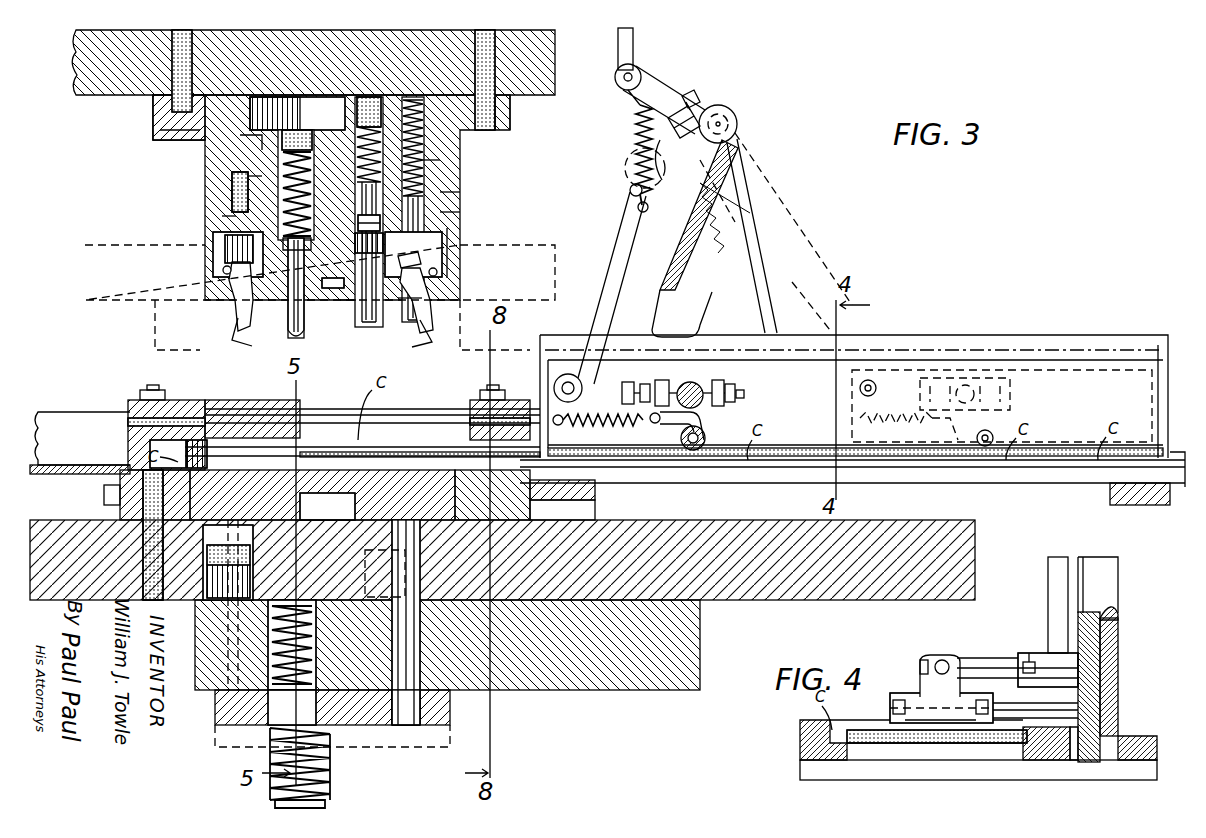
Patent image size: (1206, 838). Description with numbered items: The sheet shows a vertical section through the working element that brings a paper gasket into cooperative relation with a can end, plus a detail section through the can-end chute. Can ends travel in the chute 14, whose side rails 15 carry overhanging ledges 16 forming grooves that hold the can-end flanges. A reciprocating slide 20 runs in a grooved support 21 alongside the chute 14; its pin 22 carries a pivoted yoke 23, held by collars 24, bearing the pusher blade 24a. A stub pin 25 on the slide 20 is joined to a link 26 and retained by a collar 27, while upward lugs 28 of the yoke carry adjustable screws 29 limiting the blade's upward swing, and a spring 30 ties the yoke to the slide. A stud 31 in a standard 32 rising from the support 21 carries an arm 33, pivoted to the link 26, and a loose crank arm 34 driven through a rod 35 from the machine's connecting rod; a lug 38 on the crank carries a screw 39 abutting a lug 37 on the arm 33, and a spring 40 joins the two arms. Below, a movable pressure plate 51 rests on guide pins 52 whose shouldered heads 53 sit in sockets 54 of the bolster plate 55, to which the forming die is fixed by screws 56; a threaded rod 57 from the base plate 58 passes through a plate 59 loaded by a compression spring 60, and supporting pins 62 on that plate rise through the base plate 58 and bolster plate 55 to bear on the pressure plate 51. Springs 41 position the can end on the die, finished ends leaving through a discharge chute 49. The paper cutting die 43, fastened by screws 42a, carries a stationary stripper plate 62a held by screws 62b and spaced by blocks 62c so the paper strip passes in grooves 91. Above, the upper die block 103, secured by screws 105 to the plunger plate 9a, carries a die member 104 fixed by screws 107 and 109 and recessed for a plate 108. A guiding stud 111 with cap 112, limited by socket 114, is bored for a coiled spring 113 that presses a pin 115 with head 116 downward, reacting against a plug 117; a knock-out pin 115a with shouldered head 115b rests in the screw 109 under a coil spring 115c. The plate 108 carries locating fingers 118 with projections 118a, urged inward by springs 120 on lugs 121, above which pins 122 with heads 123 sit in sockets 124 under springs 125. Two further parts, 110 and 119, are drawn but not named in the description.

In FIG. 3, the head 9a is at (112, 84).
In FIG. 3, the socket 114 is at (165, 126).
In FIG. 3, the screws 105 is at (177, 134).
In FIG. 3, the cap 112 is at (247, 142).
In FIG. 3, the guiding stud 111 is at (232, 183).
In FIG. 3, the screw 107 is at (232, 206).
In FIG. 3, the coiled spring 113 is at (222, 217).
In FIG. 3, the head 116 is at (245, 250).
In FIG. 3, the pivot pin 119 is at (222, 272).
In FIG. 3, the locating fingers 118 is at (226, 294).
In FIG. 3, the projections 118a is at (236, 318).
In FIG. 3, the pin 115 is at (288, 322).
In FIG. 3, the plate 108 is at (330, 288).
In FIG. 3, the screw 109 is at (344, 303).
In FIG. 3, the knock-out pin 115a is at (366, 318).
In FIG. 3, the springs 120 is at (408, 302).
In FIG. 3, the shouldered head 115b is at (386, 270).
In FIG. 3, the plug 117 is at (291, 130).
In FIG. 3, the slot 110 is at (346, 110).
In FIG. 3, the coil spring 115c is at (391, 126).
In FIG. 3, the springs 125 is at (502, 119).
In FIG. 3, the sockets 124 is at (442, 160).
In FIG. 3, the upper die block 103 is at (458, 186).
In FIG. 3, the heads 123 is at (458, 196).
In FIG. 3, the pins 122 is at (457, 216).
In FIG. 3, the die member 104 is at (463, 240).
In FIG. 3, the lugs 121 is at (440, 250).
In FIG. 3, the arm 35 is at (618, 52).
In FIG. 3, the crank arm 34 is at (660, 90).
In FIG. 3, the screw 39 is at (692, 100).
In FIG. 3, the lug 38 is at (670, 118).
In FIG. 3, the lug 37 is at (660, 142).
In FIG. 3, the spring 40 is at (640, 168).
In FIG. 3, the stud 31 is at (735, 124).
In FIG. 3, the arm 33 is at (626, 245).
In FIG. 4, the arm 33 is at (1048, 567).
In FIG. 3, the standard 32 is at (742, 240).
In FIG. 4, the standard 32 is at (1118, 561).
In FIG. 3, the reciprocating slide 20 is at (766, 362).
In FIG. 4, the reciprocating slide 20 is at (1118, 626).
In FIG. 3, the grooved support 21 is at (882, 340).
In FIG. 4, the grooved support 21 is at (1120, 609).
In FIG. 3, the lugs 28 is at (662, 380).
In FIG. 4, the lugs 28 is at (943, 655).
In FIG. 3, the link 26 is at (605, 392).
In FIG. 4, the link 26 is at (1120, 653).
In FIG. 3, the stub pin 25 is at (706, 390).
In FIG. 4, the stub pin 25 is at (975, 668).
In FIG. 3, the adjustable screws 29 is at (745, 394).
In FIG. 3, the yoke 23 is at (702, 420).
In FIG. 4, the yoke 23 is at (945, 712).
In FIG. 3, the pin 22 is at (706, 436).
In FIG. 4, the pin 22 is at (1120, 687).
In FIG. 3, the spring 30 is at (600, 426).
In FIG. 3, the pusher blade 24a is at (630, 470).
In FIG. 3, the chute 14 is at (938, 485).
In FIG. 4, the chute 14 is at (790, 779).
In FIG. 3, the screws 62b is at (151, 386).
In FIG. 3, the stationary stripper plate 62a is at (142, 392).
In FIG. 3, the spacing blocks 62c is at (130, 420).
In FIG. 3, the grooves 91 is at (203, 407).
In FIG. 3, the springs 41 is at (222, 438).
In FIG. 3, the discharge chute 49 is at (58, 425).
In FIG. 3, the paper cutting die 43 is at (126, 431).
In FIG. 3, the screws 42a is at (118, 482).
In FIG. 3, the screws 56 is at (106, 522).
In FIG. 3, the movable pressure plate 51 is at (376, 462).
In FIG. 3, the guide pins 52 is at (212, 570).
In FIG. 3, the sockets 54 is at (226, 600).
In FIG. 3, the shouldered heads 53 is at (270, 642).
In FIG. 3, the threaded rod 57 is at (272, 662).
In FIG. 3, the coiled compression spring 60 is at (326, 766).
In FIG. 3, the plate 59 is at (378, 728).
In FIG. 3, the supporting pins 62 is at (430, 650).
In FIG. 3, the base plate 58 is at (533, 698).
In FIG. 3, the bolster plate 55 is at (748, 600).
In FIG. 4, the collar 27 is at (1029, 653).
In FIG. 4, the overhanging strips or ledges 16 is at (815, 726).
In FIG. 4, the side rails 15 is at (800, 752).
In FIG. 4, the collars 24 is at (890, 703).